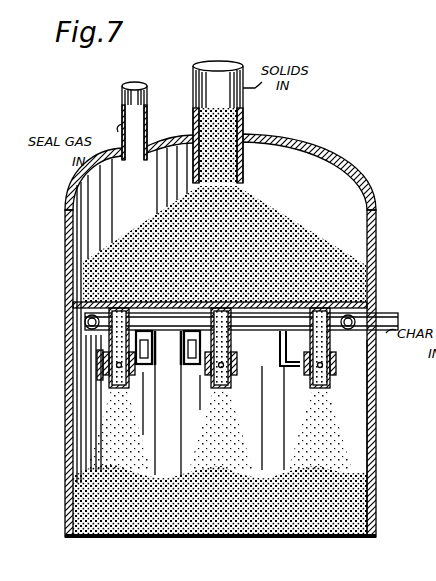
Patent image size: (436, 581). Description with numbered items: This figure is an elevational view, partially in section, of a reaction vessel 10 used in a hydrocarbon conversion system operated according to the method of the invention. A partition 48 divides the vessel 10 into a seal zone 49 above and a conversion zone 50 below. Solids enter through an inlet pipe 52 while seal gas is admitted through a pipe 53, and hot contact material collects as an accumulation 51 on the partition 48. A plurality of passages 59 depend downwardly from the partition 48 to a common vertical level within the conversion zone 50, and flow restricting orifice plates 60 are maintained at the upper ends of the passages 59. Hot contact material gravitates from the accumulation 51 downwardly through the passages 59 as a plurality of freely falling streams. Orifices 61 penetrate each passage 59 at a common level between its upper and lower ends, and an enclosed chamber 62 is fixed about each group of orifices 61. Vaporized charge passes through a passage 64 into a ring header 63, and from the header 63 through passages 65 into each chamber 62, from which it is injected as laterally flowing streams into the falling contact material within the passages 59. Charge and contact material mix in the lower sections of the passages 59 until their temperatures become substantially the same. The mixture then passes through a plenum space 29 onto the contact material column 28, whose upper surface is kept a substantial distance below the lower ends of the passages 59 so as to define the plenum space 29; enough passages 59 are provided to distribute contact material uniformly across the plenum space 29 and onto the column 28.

The vessel 10 is at (300, 146).
The contact material column 28 is at (77, 505).
The plenum space 29 is at (356, 426).
The partition 48 is at (73, 302).
The seal zone 49 is at (82, 228).
The conversion zone 50 is at (80, 440).
The accumulation 51 is at (72, 272).
The solids inlet pipe 52 is at (193, 71).
The seal gas inlet pipe 53 is at (122, 98).
The passages 59 is at (232, 348).
The flow restricting orifice plates 60 is at (224, 244).
The orifices 61 is at (118, 368).
The enclosed chamber 62 is at (97, 363).
The ring header 63 is at (357, 320).
The passage 64 is at (381, 333).
The passages 65 is at (282, 364).